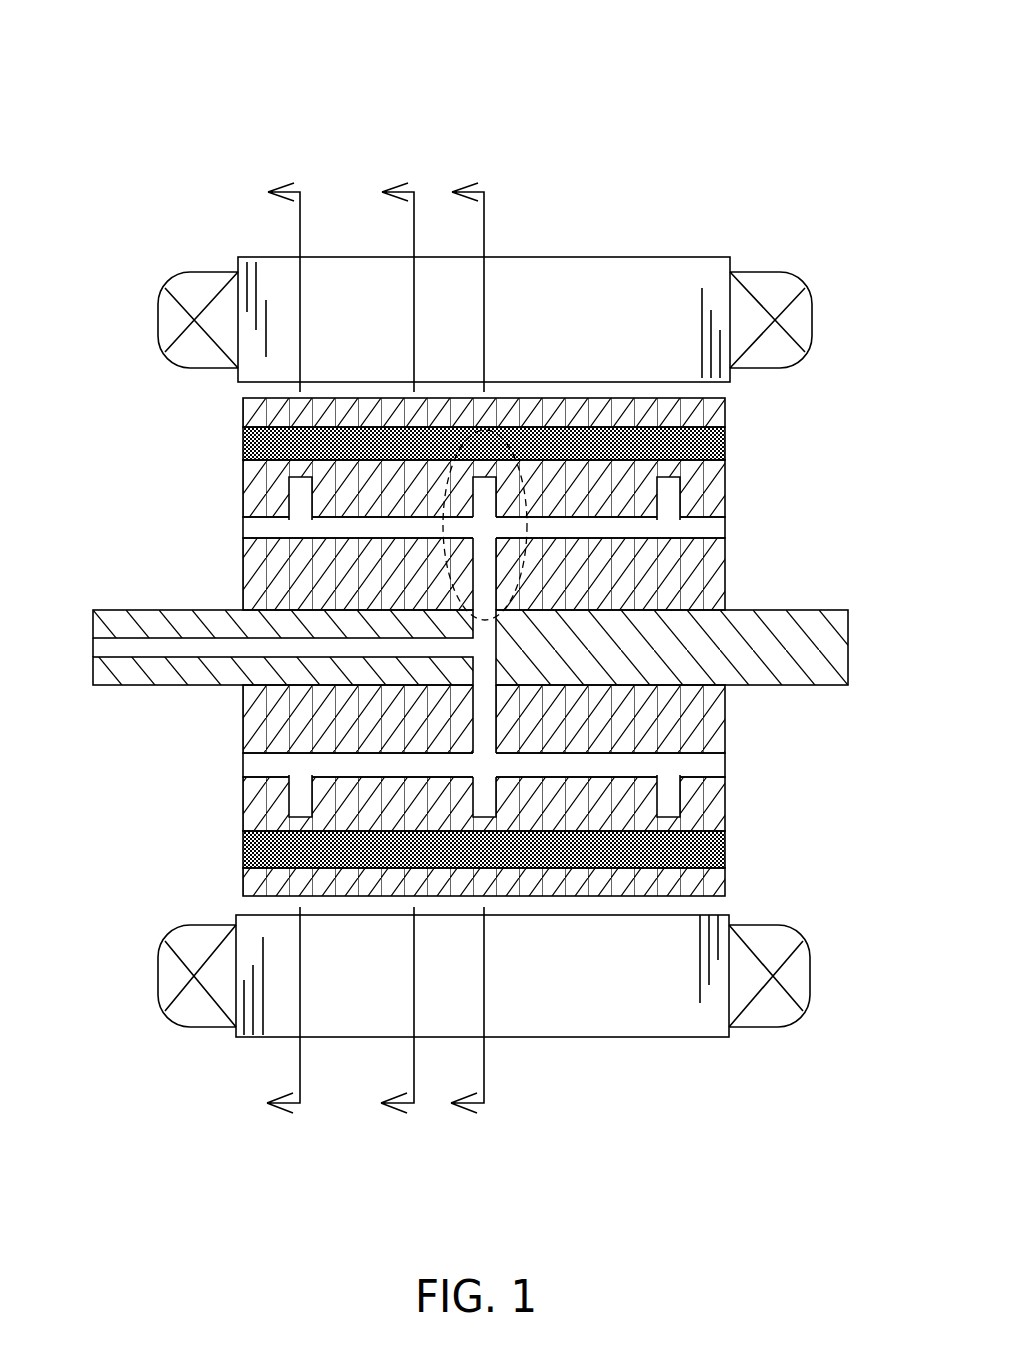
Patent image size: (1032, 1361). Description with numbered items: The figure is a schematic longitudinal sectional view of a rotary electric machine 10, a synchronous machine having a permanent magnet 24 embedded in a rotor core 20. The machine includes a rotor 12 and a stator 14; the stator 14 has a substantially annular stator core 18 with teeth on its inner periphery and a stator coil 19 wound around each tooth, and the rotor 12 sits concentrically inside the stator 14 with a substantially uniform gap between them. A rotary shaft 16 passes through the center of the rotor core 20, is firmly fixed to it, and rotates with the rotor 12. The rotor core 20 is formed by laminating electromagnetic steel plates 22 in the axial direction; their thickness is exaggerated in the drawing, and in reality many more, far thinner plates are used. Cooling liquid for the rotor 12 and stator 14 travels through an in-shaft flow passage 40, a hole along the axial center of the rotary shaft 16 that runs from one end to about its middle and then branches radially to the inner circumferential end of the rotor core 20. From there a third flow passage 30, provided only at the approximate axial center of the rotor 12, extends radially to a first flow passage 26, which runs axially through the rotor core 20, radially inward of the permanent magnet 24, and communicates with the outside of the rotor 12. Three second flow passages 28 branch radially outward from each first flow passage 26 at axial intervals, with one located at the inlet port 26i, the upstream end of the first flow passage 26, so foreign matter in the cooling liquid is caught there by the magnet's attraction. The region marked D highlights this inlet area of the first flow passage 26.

The rotary electric machine 10 is at (549, 145).
The rotor 12 is at (183, 501).
The stator 14 is at (697, 219).
The rotary shaft 16 is at (822, 628).
The stator core 18 is at (589, 270).
The stator coil 19 is at (780, 268).
The rotor core 20 is at (718, 570).
The electromagnetic steel plate 22 is at (598, 885).
The permanent magnet 24 is at (708, 447).
The first flow passage 26 is at (262, 767).
The inlet port 26i is at (483, 543).
The second flow passage 28 is at (297, 802).
The third flow passage 30 is at (487, 720).
The in-shaft flow passage 40 is at (102, 650).
The detail region D is at (440, 553).